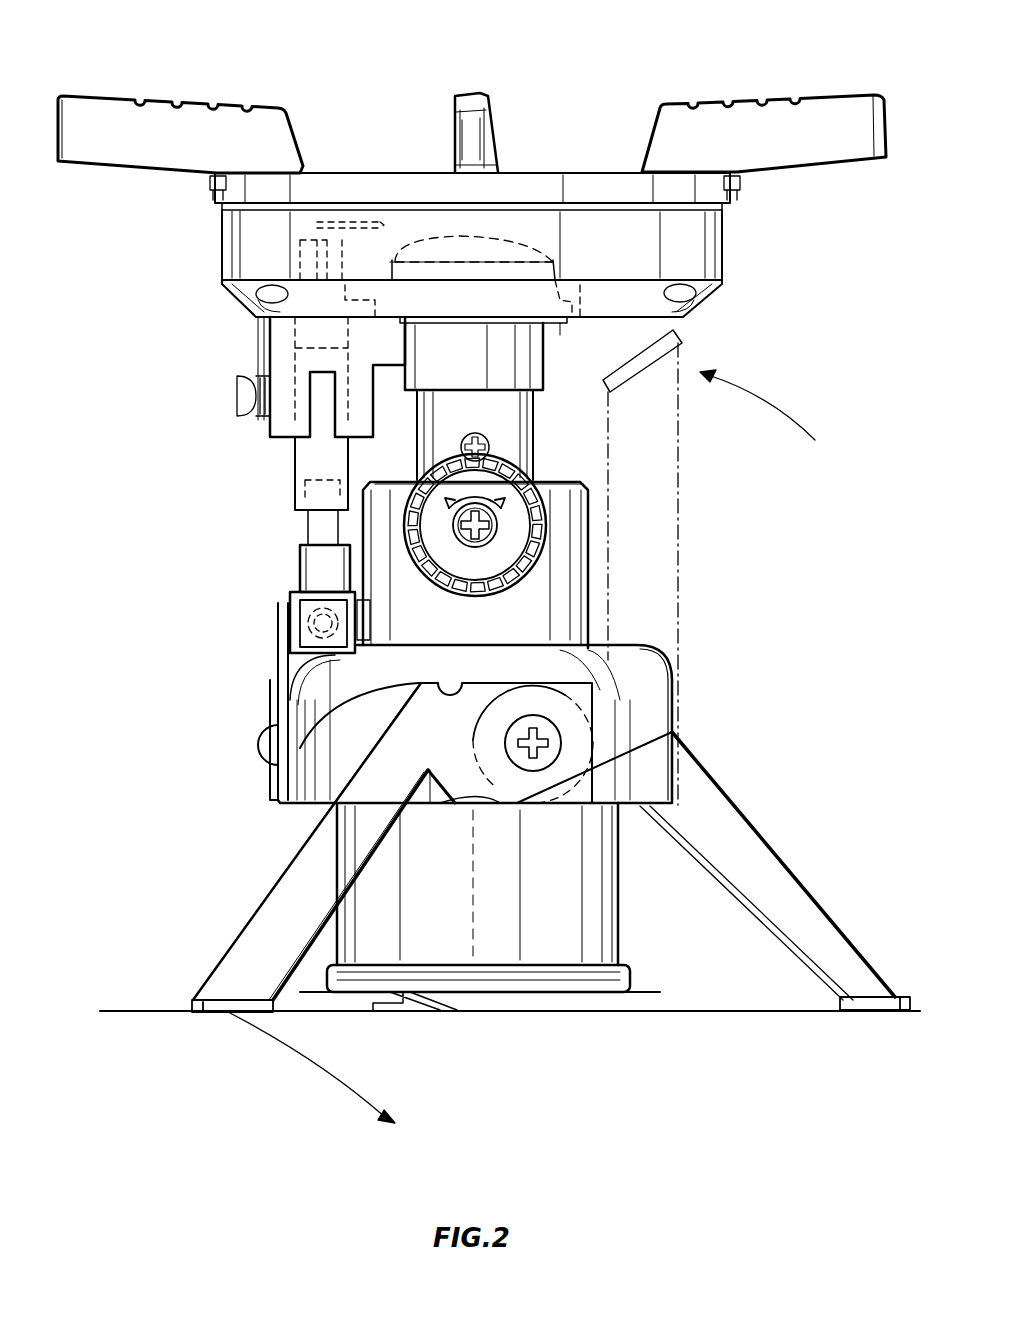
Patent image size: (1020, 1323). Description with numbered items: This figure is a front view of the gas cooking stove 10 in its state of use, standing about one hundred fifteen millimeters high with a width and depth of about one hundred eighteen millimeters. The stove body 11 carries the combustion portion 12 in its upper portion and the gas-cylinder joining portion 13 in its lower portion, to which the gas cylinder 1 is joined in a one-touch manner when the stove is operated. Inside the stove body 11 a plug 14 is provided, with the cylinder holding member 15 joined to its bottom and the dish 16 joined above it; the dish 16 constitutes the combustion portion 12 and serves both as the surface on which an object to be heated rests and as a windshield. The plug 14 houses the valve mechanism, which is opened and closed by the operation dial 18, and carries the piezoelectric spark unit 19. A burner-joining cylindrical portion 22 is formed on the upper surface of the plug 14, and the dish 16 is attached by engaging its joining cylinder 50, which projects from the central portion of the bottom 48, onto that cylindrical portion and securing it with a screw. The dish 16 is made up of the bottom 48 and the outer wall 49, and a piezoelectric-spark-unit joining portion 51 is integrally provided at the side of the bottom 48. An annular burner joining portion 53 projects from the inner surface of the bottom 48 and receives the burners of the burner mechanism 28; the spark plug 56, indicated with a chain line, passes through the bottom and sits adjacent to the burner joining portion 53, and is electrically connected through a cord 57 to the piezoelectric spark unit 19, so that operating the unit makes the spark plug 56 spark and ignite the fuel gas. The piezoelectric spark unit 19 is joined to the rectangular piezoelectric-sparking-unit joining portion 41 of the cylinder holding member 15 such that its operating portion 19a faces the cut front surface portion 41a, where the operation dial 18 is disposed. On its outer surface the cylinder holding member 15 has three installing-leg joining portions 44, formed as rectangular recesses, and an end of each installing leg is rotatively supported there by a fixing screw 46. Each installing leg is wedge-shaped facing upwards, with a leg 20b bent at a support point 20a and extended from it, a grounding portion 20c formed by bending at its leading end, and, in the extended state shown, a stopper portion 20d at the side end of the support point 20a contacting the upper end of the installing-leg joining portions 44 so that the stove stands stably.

The gas cylinder 1 is at (600, 888).
The gas cooking stove 10 is at (112, 40).
The stove body 11 is at (256, 533).
The combustion portion 12 is at (195, 271).
The gas-cylinder joining portion 13 is at (648, 842).
The plug 14 is at (565, 585).
The cylinder holding member 15 is at (300, 702).
The dish 16 is at (238, 249).
The operation dial 18 is at (555, 515).
The piezoelectric spark unit 19 is at (298, 570).
The operating portion 19a is at (320, 622).
The support point 20a is at (458, 782).
The leg 20b is at (305, 872).
The grounding portion 20c is at (204, 1013).
The stopper portion 20d is at (320, 710).
The burner-joining cylindrical portion 22 is at (560, 470).
The burner mechanism 28 is at (500, 240).
The piezoelectric-sparking-unit joining portion 41 is at (283, 652).
The front surface portion 41a is at (285, 608).
The installing-leg joining portions 44 is at (585, 700).
The fixing screw 46 is at (545, 762).
The bottom 48 is at (645, 320).
The outer wall 49 is at (710, 244).
The joining cylinder 50 is at (523, 355).
The piezoelectric-spark-unit joining portion 51 is at (278, 354).
The burner joining portion 53 is at (560, 260).
The spark plug 56 is at (372, 222).
The cord 57 is at (310, 528).